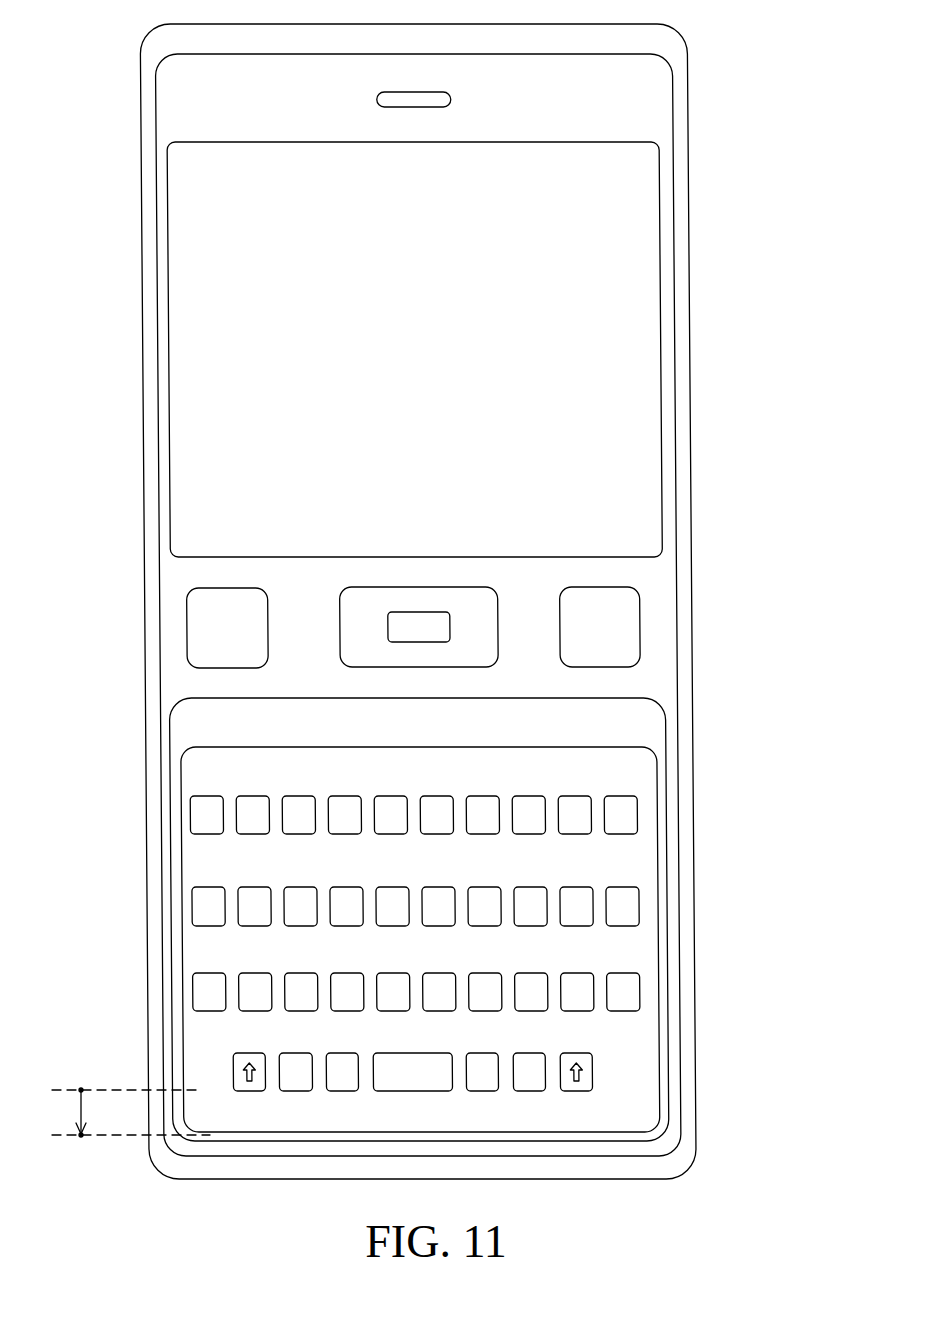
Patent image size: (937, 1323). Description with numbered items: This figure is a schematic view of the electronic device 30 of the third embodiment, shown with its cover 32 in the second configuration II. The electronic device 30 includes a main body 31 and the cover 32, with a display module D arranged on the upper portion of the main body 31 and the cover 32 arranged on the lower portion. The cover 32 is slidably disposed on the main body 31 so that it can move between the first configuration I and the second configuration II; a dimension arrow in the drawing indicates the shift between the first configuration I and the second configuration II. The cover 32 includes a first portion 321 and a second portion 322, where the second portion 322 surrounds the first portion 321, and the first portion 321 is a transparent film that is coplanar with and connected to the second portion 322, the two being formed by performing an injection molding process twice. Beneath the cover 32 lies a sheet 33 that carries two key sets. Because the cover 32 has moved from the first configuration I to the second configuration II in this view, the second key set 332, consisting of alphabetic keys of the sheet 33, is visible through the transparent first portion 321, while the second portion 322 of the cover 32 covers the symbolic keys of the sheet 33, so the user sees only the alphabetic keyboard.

The electronic device 30 is at (55, 36).
The main body 31 is at (665, 337).
The display module D is at (637, 235).
The cover 32 is at (778, 888).
The first portion 321 is at (637, 903).
The second portion 322 is at (636, 950).
The sheet 33 is at (645, 722).
The second key set 332 is at (637, 810).
The first configuration I is at (115, 1090).
The second configuration II is at (120, 1118).